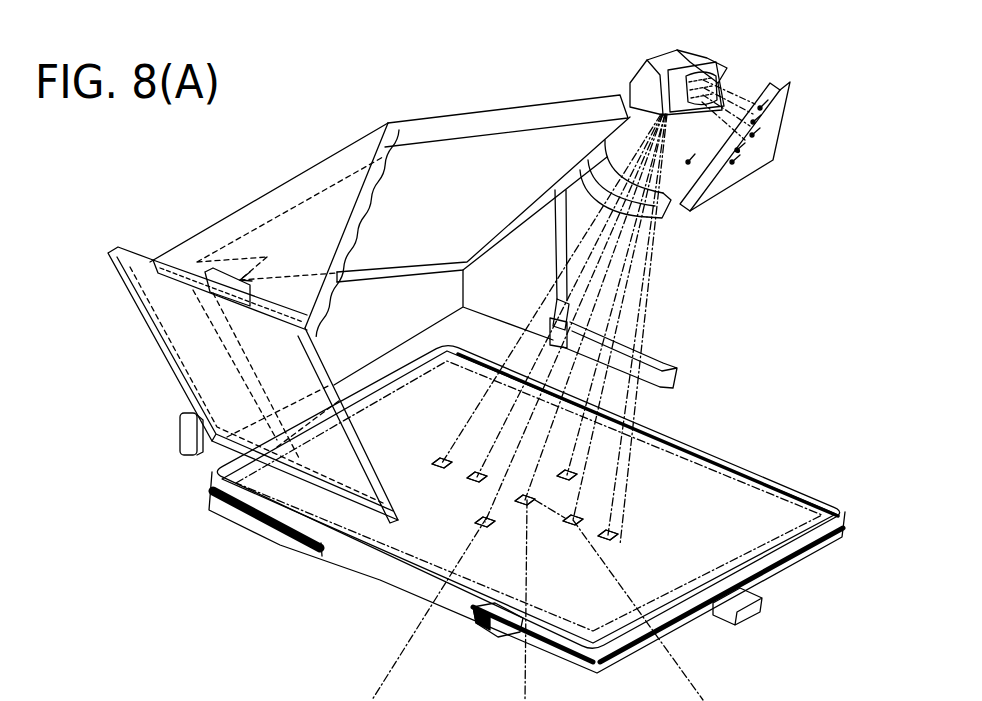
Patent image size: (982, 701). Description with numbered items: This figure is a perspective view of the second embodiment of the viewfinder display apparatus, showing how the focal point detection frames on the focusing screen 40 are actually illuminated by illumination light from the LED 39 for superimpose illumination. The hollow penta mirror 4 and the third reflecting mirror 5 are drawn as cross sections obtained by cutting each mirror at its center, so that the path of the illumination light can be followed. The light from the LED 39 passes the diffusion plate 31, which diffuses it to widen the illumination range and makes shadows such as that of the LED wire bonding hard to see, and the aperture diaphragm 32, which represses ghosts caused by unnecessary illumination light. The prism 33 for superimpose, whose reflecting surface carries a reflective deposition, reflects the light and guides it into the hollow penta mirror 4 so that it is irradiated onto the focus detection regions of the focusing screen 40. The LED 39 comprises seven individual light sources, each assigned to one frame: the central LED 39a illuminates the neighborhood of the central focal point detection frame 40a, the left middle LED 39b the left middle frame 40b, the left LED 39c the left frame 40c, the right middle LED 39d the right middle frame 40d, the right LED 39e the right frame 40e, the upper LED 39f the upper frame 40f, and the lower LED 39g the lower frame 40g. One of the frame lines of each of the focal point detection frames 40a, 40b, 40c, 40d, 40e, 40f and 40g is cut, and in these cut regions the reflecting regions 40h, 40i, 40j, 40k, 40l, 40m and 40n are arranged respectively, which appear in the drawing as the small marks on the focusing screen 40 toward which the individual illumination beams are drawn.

The hollow penta mirror 4 is at (300, 183).
The third reflecting mirror 5 is at (162, 353).
The diffusion plate 31 is at (770, 82).
The aperture diaphragm 32 is at (717, 67).
The prism for superimpose 33 is at (667, 53).
The LED for superimpose illumination 39 is at (793, 93).
The LED-C 39a is at (739, 151).
The LED-L1 39b is at (755, 122).
The LED-L2 39c is at (762, 108).
The LED-R1 39d is at (733, 164).
The LED-R2 39e is at (738, 153).
The LED-T 39f is at (754, 135).
The LED-B 39g is at (688, 164).
The focusing screen 40 is at (343, 557).
The central focal point detection frame 40a is at (533, 503).
The left middle focal point detection frame 40b is at (470, 480).
The left focal point detection frame 40c is at (435, 467).
The right middle focal point detection frame 40d is at (570, 524).
The right focal point detection frame 40e is at (613, 540).
The upper focal point detection frame 40f is at (477, 522).
The lower focal point detection frame 40g is at (578, 480).
The reflecting region 40h is at (525, 493).
The reflecting region 40i is at (483, 467).
The reflecting region 40j is at (450, 455).
The reflecting region 40k is at (585, 515).
The reflecting region 40l is at (620, 533).
The reflecting region 40m is at (495, 522).
The reflecting region 40n is at (575, 470).